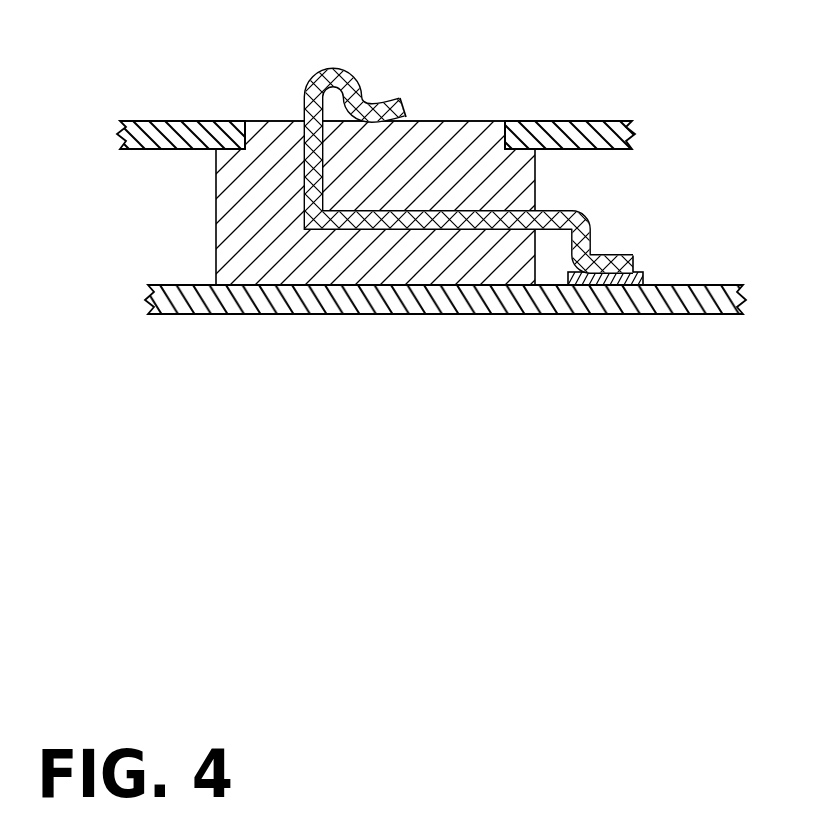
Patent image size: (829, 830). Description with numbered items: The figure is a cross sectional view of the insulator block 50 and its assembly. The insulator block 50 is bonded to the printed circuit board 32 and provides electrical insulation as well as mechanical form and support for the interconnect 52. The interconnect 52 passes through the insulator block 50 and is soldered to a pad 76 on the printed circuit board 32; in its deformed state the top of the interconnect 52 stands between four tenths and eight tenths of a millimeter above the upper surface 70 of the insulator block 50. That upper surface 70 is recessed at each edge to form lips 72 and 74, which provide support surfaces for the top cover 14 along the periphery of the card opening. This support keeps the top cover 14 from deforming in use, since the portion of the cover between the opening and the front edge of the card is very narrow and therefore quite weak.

The top cover 14 is at (113, 135).
The printed circuit board 32 is at (593, 314).
The insulator block 50 is at (314, 171).
The interconnect 52 is at (362, 73).
The upper surface 70 is at (452, 121).
The lip 72 is at (245, 131).
The lip 74 is at (498, 131).
The pad 76 is at (645, 282).